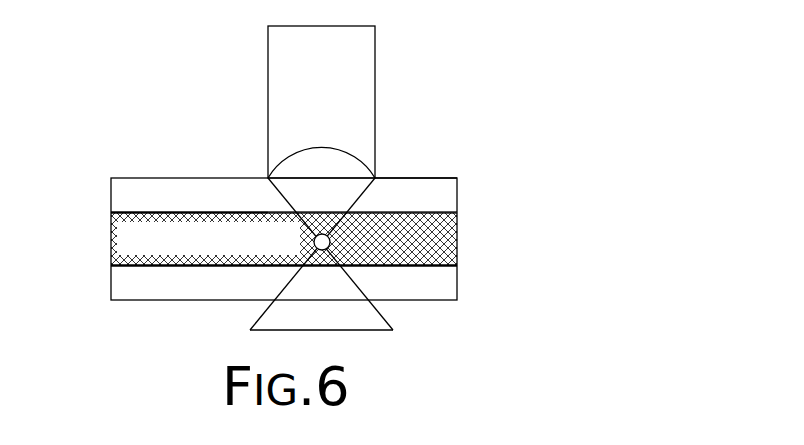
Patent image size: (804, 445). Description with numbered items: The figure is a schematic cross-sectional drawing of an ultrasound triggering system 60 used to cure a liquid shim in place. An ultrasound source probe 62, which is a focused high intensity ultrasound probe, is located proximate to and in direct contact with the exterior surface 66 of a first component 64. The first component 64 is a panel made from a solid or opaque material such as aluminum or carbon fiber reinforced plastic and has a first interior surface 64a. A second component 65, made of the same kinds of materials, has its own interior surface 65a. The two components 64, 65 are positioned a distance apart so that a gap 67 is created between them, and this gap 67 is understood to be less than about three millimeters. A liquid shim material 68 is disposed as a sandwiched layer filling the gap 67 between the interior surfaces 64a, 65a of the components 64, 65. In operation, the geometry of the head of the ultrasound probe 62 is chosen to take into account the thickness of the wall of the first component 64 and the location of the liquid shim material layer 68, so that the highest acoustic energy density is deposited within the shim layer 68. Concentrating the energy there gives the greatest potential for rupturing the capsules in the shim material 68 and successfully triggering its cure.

The ultrasound triggering system 60 is at (490, 102).
The ultrasound source probe 62 is at (375, 122).
The first component 64 is at (457, 197).
The first interior surface 64a is at (111, 213).
The second component 65 is at (457, 287).
The interior surface 65a is at (457, 266).
The exterior surface 66 is at (398, 178).
The gap 67 is at (84, 212).
The liquid shim material 68 is at (457, 222).